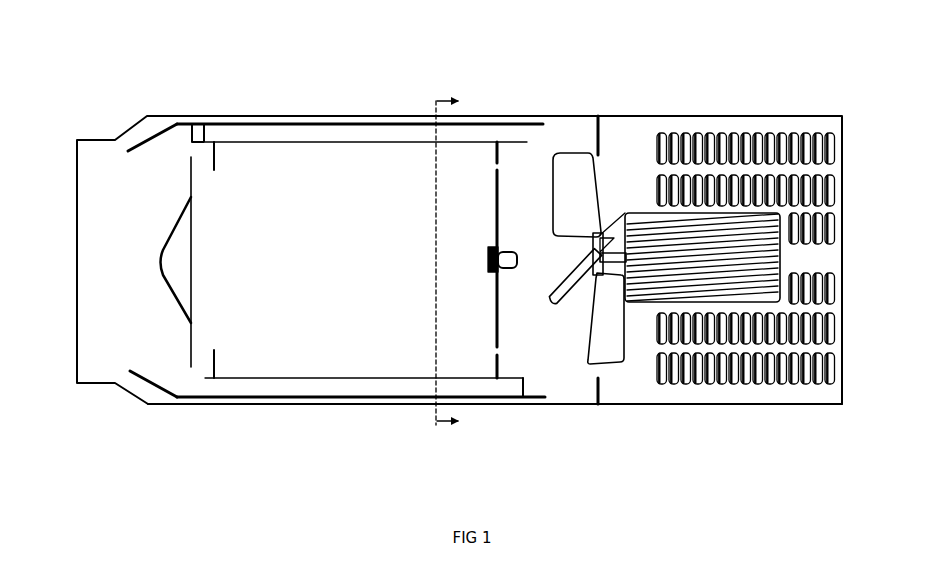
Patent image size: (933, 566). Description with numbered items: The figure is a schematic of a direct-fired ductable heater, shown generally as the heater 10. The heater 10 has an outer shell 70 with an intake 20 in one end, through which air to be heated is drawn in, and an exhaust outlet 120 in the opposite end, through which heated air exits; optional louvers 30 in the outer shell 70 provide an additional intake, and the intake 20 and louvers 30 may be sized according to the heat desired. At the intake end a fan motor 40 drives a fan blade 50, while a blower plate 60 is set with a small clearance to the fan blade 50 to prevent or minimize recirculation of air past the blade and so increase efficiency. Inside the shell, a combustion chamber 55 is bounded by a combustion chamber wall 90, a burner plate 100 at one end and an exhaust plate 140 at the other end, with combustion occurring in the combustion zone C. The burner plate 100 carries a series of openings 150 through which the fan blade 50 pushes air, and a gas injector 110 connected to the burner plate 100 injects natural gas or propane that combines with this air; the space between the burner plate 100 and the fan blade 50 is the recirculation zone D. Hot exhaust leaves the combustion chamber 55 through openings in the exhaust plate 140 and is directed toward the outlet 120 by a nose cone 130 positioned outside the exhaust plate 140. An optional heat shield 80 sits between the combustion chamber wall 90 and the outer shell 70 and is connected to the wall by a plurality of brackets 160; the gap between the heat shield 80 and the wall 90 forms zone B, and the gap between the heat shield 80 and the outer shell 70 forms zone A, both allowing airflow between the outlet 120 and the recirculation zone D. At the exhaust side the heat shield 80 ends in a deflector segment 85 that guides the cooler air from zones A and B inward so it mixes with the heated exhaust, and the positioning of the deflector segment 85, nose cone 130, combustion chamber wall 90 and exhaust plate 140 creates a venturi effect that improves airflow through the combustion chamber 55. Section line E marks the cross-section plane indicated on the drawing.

The heater 10 is at (144, 465).
The intake 20 is at (842, 220).
The louvers 30 is at (660, 130).
The fan motor 40 is at (653, 300).
The fan blade 50 is at (578, 130).
The combustion chamber 55 is at (289, 289).
The blower plate 60 is at (598, 390).
The outer shell 70 is at (212, 405).
The heat shield 80 is at (267, 397).
The deflector segment 85 is at (146, 134).
The combustion chamber wall 90 is at (309, 378).
The burner plate 100 is at (500, 152).
The gas injector 110 is at (489, 257).
The exhaust outlet 120 is at (80, 256).
The nose cone 130 is at (177, 290).
The exhaust plate 140 is at (217, 160).
The openings 150 is at (497, 350).
The brackets 160 is at (197, 128).
The zone A is at (320, 116).
The zone B is at (247, 131).
The combustion zone C is at (367, 183).
The recirculation zone D is at (533, 327).
The section line E is at (445, 264).